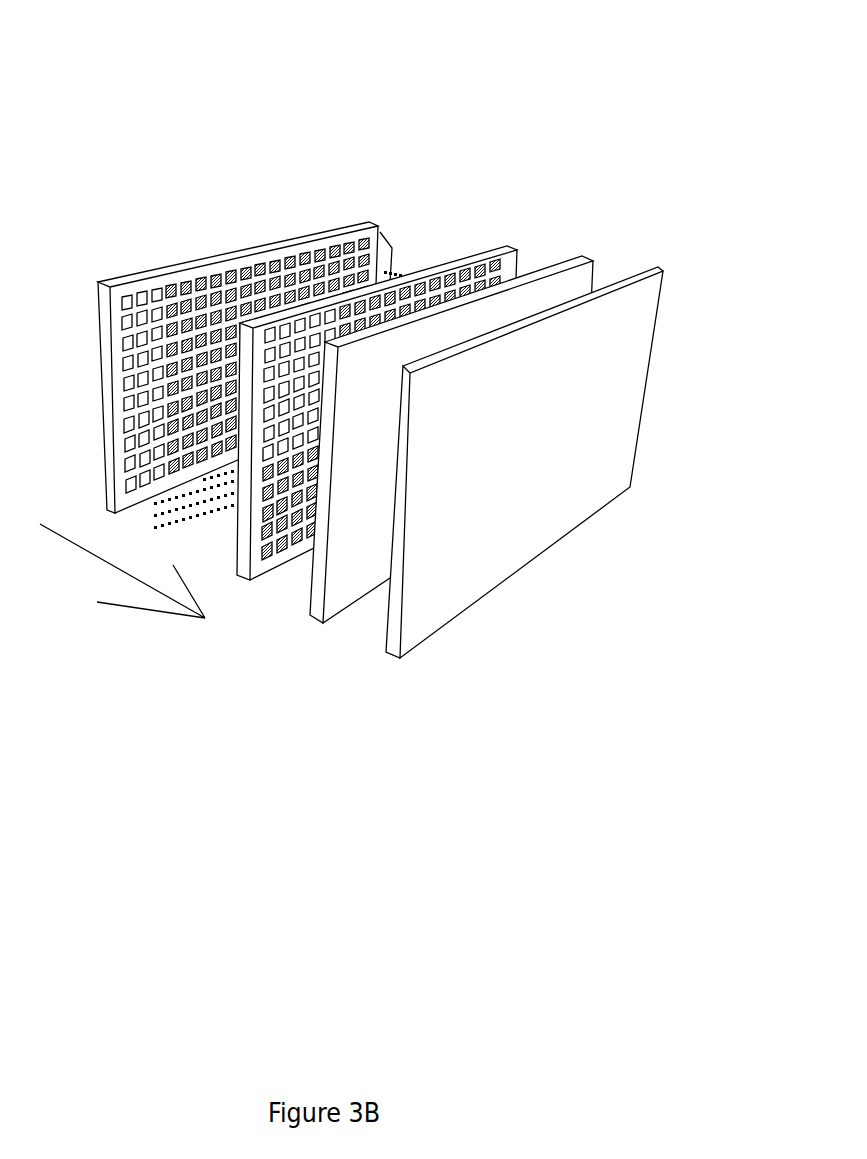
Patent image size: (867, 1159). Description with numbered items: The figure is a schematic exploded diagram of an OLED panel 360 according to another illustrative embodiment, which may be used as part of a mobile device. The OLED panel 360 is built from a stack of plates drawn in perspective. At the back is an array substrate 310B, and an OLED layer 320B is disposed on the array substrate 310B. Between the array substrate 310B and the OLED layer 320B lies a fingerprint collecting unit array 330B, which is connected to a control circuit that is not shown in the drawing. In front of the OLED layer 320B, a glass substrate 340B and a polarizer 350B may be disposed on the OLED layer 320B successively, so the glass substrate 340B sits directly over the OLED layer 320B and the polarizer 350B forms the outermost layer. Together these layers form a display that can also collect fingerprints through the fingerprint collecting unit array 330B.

The OLED panel 360 is at (329, 22).
The array substrate 310B is at (352, 246).
The fingerprint collecting unit array 330B is at (385, 261).
The OLED layer 320B is at (481, 264).
The glass substrate 340B is at (560, 283).
The polarizer 350B is at (625, 320).